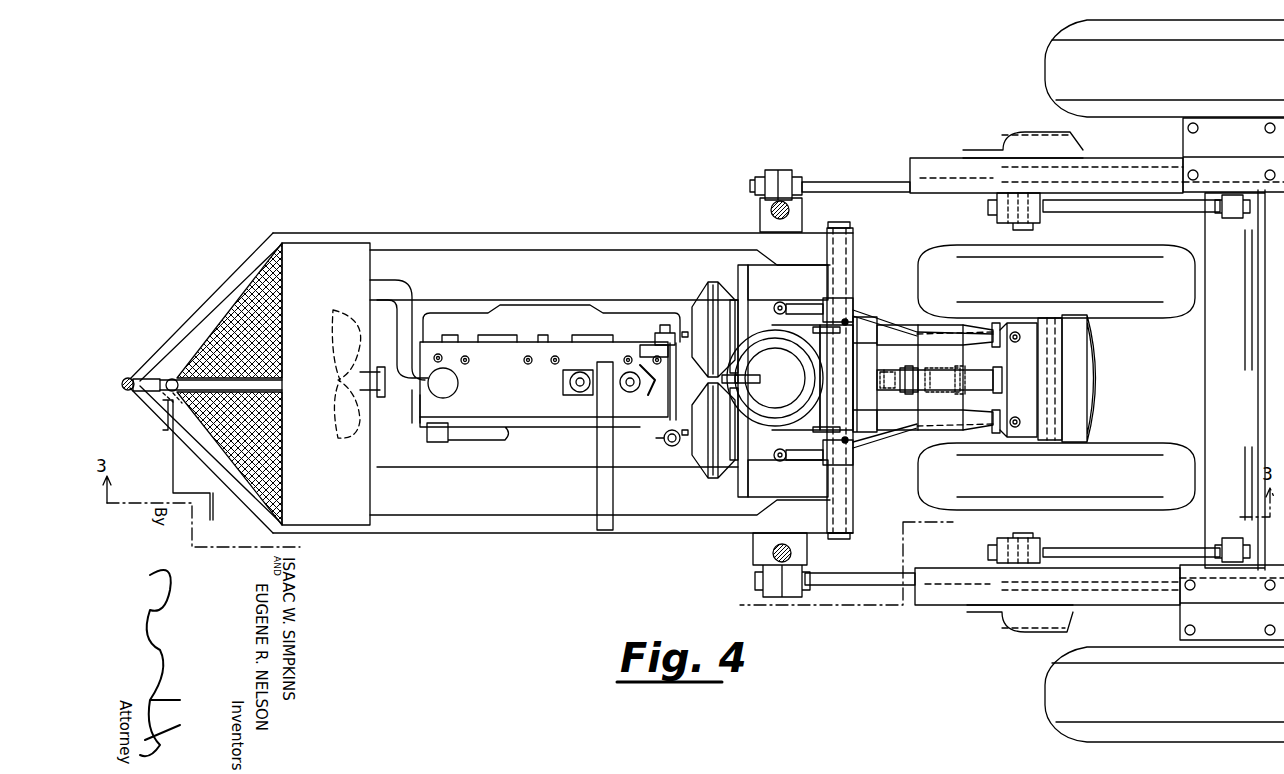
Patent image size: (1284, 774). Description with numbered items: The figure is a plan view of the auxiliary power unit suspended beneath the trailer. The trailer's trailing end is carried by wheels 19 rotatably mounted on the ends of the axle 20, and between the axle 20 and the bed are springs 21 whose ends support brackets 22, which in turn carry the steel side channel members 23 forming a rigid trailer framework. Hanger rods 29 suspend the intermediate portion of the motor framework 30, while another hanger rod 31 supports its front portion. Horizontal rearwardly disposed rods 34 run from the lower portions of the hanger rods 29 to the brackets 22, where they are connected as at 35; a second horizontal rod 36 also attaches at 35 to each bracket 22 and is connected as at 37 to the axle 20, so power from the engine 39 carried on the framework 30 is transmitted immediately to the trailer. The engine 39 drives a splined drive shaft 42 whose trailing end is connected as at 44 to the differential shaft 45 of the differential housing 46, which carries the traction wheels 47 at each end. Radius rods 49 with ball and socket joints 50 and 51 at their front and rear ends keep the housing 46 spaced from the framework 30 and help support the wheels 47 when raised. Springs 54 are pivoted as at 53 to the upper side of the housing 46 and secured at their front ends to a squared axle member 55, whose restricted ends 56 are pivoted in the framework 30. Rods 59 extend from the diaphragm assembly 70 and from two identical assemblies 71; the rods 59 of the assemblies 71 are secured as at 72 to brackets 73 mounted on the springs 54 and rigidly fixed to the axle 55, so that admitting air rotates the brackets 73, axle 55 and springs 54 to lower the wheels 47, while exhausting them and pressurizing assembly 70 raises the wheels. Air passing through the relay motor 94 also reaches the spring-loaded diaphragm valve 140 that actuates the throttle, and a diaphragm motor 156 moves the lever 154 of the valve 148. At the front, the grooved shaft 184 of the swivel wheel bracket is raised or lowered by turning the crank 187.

The wheels 19 is at (1047, 70).
The axle 20 is at (1205, 352).
The springs 21 is at (1140, 137).
The brackets 22 is at (1025, 132).
The side channel members 23 is at (916, 160).
The hanger rods 29 is at (790, 212).
The motor framework 30 is at (573, 233).
The hanger rod 31 is at (126, 379).
The rods 34 is at (875, 182).
The connection 35 is at (1008, 223).
The second horizontal rod 36 is at (1135, 212).
The connection 37 is at (1236, 218).
The engine 39 is at (525, 405).
The drive shaft 42 is at (923, 374).
The connection 44 is at (926, 372).
The differential shaft 45 is at (962, 372).
The differential housing 46 is at (1100, 374).
The wheels 47 is at (1056, 377).
The radius rods 49 is at (896, 322).
The ball and socket joint 50 is at (795, 296).
The ball and socket joint 51 is at (1018, 332).
The pivot 53 is at (1065, 350).
The springs 54 is at (915, 330).
The squared axle member 55 is at (853, 300).
The restricted ends 56 is at (847, 232).
The rods 59 is at (778, 322).
The diaphragm assembly 70 is at (745, 380).
The diaphragm assemblies 71 is at (705, 298).
The connection 72 is at (824, 338).
The brackets 73 is at (865, 318).
The relay motor 94 is at (565, 378).
The diaphragm valve 140 is at (668, 445).
The valve 148 is at (640, 352).
The lever 154 is at (655, 385).
The diaphragm motor 156 is at (660, 345).
The grooved shaft 184 is at (166, 388).
The crank 187 is at (172, 466).